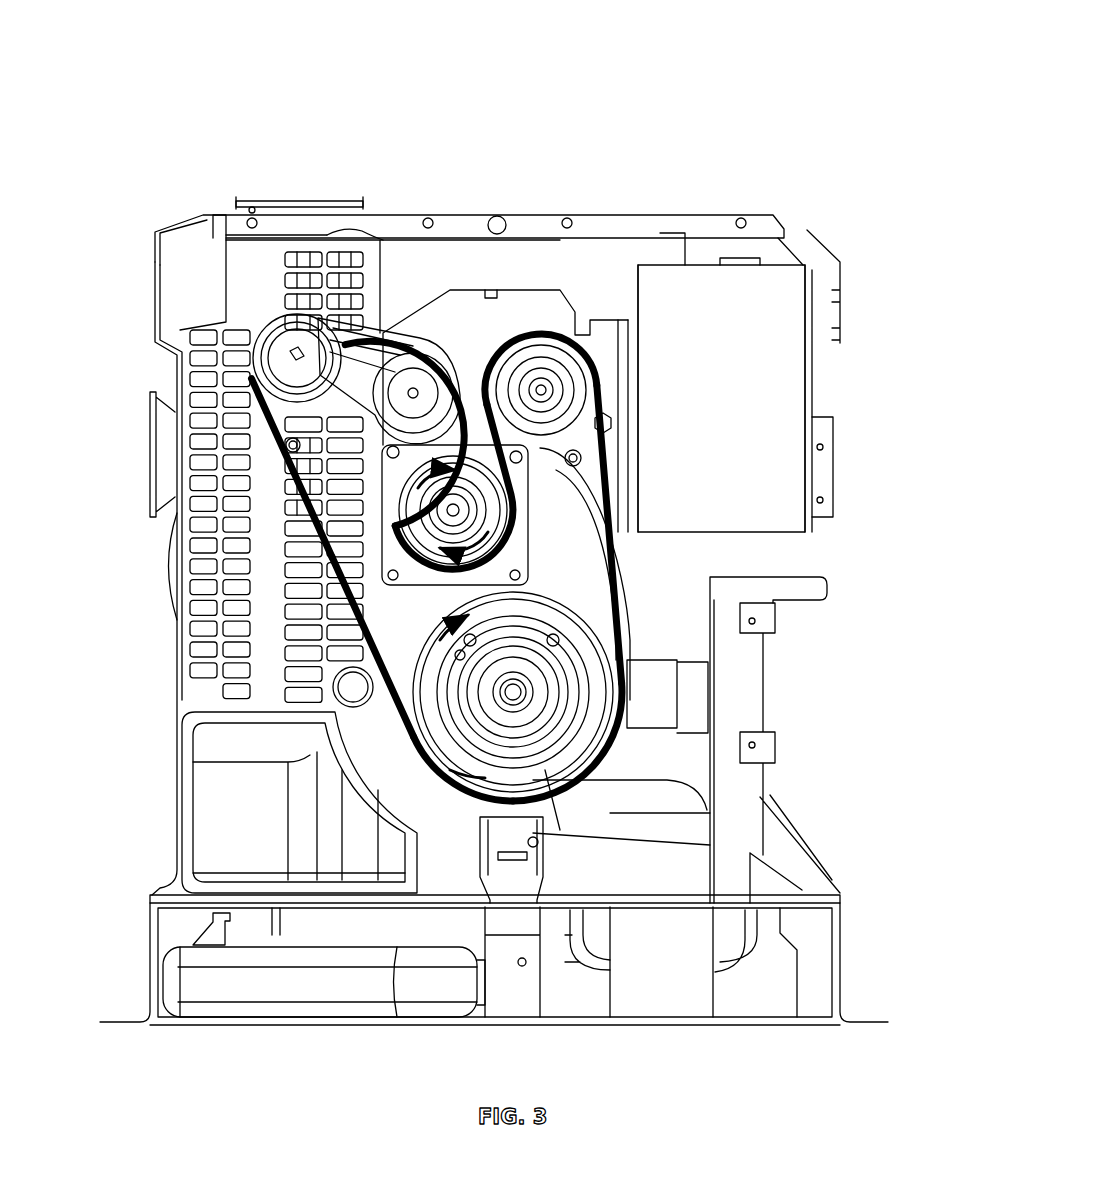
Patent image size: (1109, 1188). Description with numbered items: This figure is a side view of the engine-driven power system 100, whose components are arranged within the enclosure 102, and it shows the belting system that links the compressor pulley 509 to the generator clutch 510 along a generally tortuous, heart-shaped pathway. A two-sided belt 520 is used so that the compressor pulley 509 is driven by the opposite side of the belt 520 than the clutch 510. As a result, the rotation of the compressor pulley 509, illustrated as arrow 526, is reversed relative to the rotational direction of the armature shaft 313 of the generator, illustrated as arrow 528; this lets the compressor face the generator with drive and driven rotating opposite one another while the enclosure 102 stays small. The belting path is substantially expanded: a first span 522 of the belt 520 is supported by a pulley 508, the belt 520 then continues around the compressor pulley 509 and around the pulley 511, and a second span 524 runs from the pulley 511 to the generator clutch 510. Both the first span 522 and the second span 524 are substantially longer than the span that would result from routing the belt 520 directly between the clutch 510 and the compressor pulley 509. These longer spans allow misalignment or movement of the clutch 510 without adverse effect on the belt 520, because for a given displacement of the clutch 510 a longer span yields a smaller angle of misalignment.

The power system 100 is at (750, 42).
The enclosure 102 is at (590, 205).
The armature shaft 313 is at (534, 690).
The pulley 508 is at (275, 354).
The compressor pulley 509 is at (580, 460).
The generator clutch 510 is at (550, 775).
The pulley 511 is at (556, 385).
The two-sided belt 520 is at (260, 420).
The first span 522 is at (330, 578).
The second span 524 is at (626, 560).
The arrow 526 is at (410, 702).
The arrow 528 is at (405, 514).